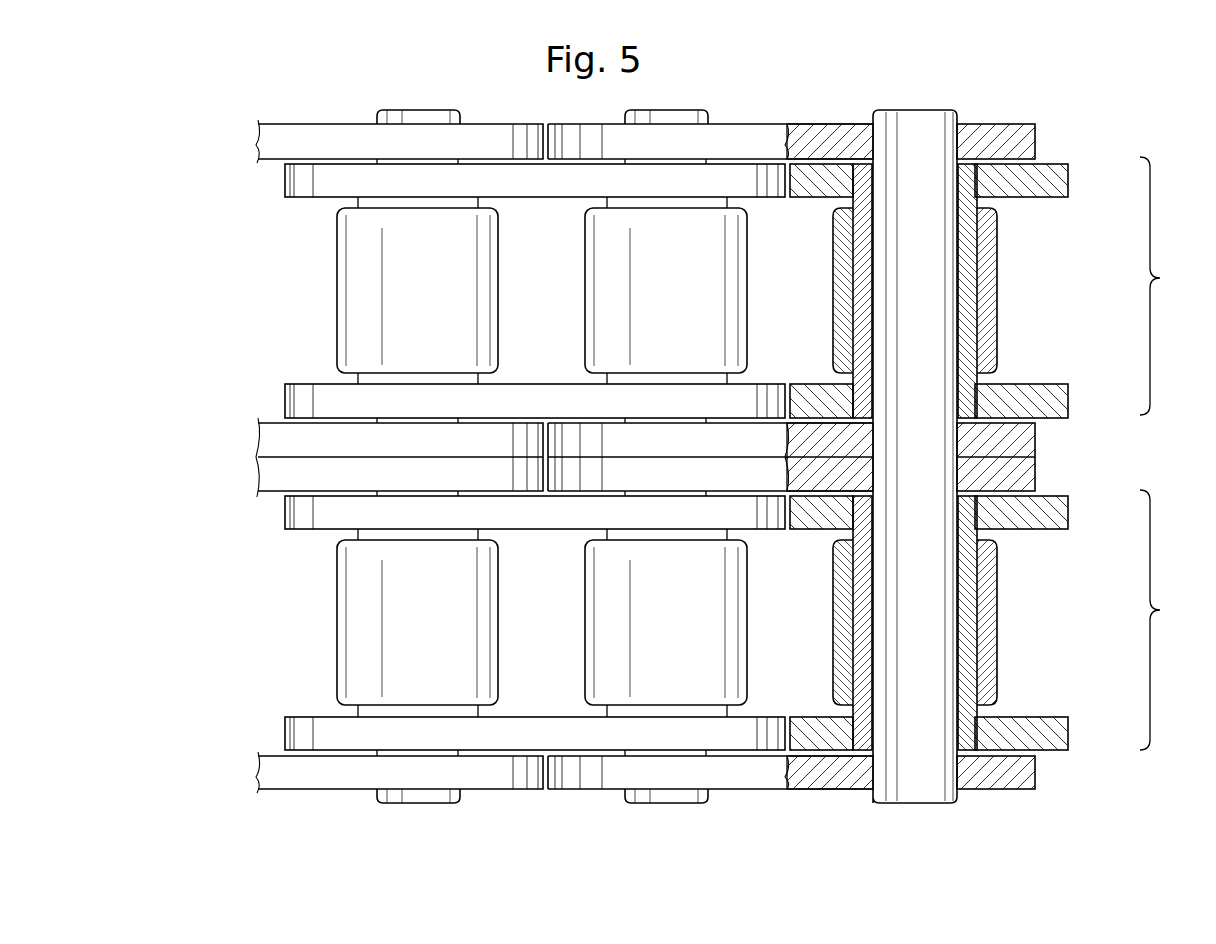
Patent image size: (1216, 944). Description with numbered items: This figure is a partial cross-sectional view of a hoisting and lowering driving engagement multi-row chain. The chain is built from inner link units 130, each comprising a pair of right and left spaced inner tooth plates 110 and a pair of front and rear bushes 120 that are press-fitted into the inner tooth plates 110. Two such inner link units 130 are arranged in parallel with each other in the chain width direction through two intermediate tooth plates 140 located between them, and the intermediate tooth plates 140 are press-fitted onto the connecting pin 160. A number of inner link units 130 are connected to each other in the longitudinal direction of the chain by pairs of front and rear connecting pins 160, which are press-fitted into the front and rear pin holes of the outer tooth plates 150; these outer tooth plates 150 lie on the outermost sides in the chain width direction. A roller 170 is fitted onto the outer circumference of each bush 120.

The inner tooth plate 110 is at (295, 183).
The bush 120 is at (967, 283).
The inner link unit 130 is at (1174, 453).
The intermediate tooth plate 140 is at (270, 475).
The outer tooth plate 150 is at (268, 140).
The connecting pin 160 is at (918, 130).
The roller 170 is at (350, 293).